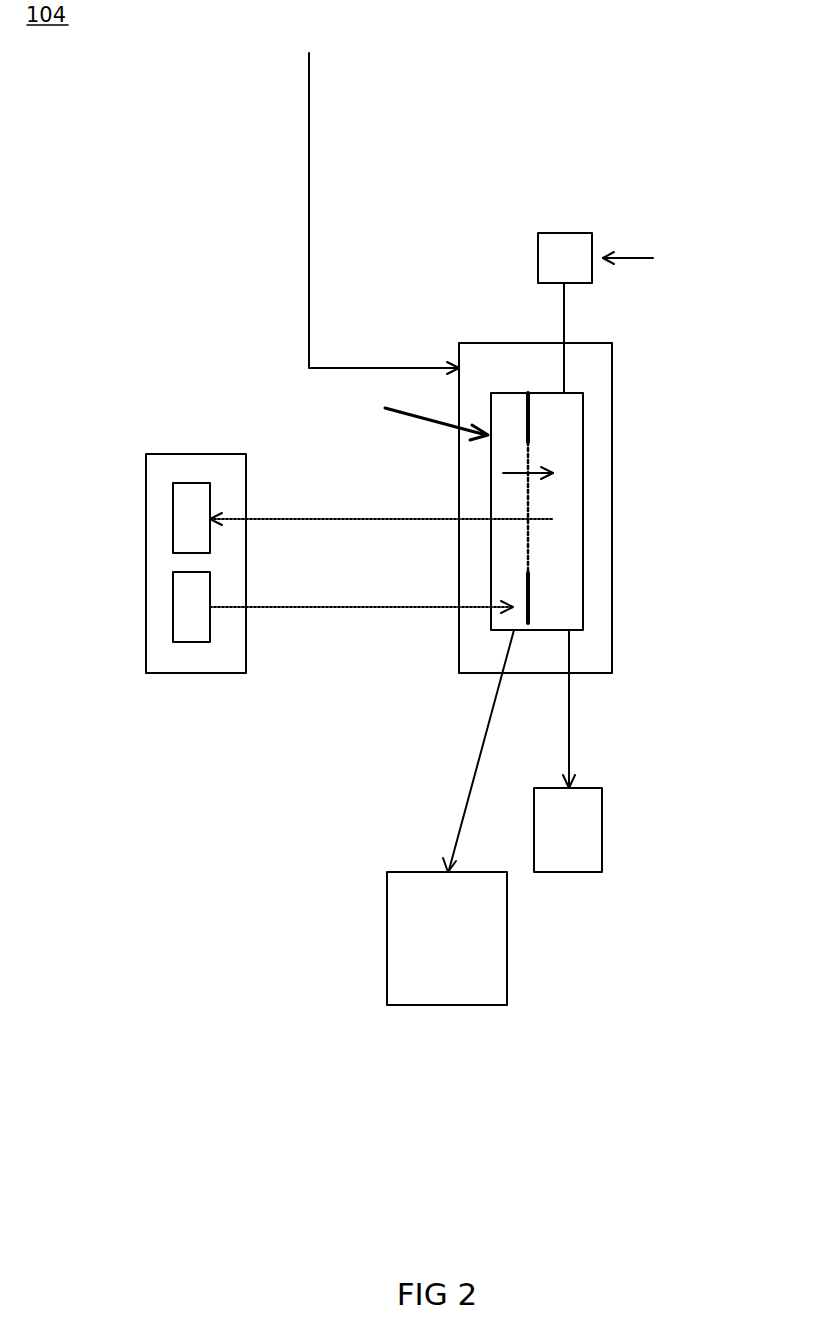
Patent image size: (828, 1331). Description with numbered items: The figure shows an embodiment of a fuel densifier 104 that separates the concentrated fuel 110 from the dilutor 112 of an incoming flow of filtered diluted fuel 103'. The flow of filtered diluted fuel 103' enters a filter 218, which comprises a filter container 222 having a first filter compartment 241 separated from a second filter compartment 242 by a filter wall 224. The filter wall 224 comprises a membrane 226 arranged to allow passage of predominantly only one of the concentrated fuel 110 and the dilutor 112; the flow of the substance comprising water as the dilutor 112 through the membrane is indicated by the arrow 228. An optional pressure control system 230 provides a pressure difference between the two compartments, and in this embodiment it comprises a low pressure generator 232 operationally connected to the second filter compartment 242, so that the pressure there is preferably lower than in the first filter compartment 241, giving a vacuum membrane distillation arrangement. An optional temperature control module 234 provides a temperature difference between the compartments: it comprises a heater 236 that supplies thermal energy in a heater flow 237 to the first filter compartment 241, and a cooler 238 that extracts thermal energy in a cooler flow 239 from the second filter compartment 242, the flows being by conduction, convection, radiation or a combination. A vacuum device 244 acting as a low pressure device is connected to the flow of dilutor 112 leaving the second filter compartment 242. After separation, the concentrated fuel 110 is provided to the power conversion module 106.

The flow of filtered diluted fuel 103' is at (294, 213).
The fuel densifier 104 is at (585, 478).
The low pressure generator 232 is at (509, 258).
The pressure control system 230 is at (654, 258).
The arrow indicating flow of dilutor substance 228 is at (617, 383).
The membrane 226 is at (614, 507).
The filter wall 224 is at (614, 595).
The second filter compartment 242 is at (602, 467).
The first filter compartment 241 is at (381, 499).
The filter container 222 is at (361, 586).
The filter 218 is at (416, 416).
The temperature control module 234 is at (136, 563).
The cooler 238 is at (180, 454).
The heater 236 is at (161, 677).
The cooler flow 239 is at (248, 437).
The heater flow 237 is at (258, 691).
The concentrated fuel 110 is at (448, 751).
The dilutor 112 is at (606, 709).
The vacuum device 244 is at (615, 830).
The power conversion module 106 is at (392, 938).